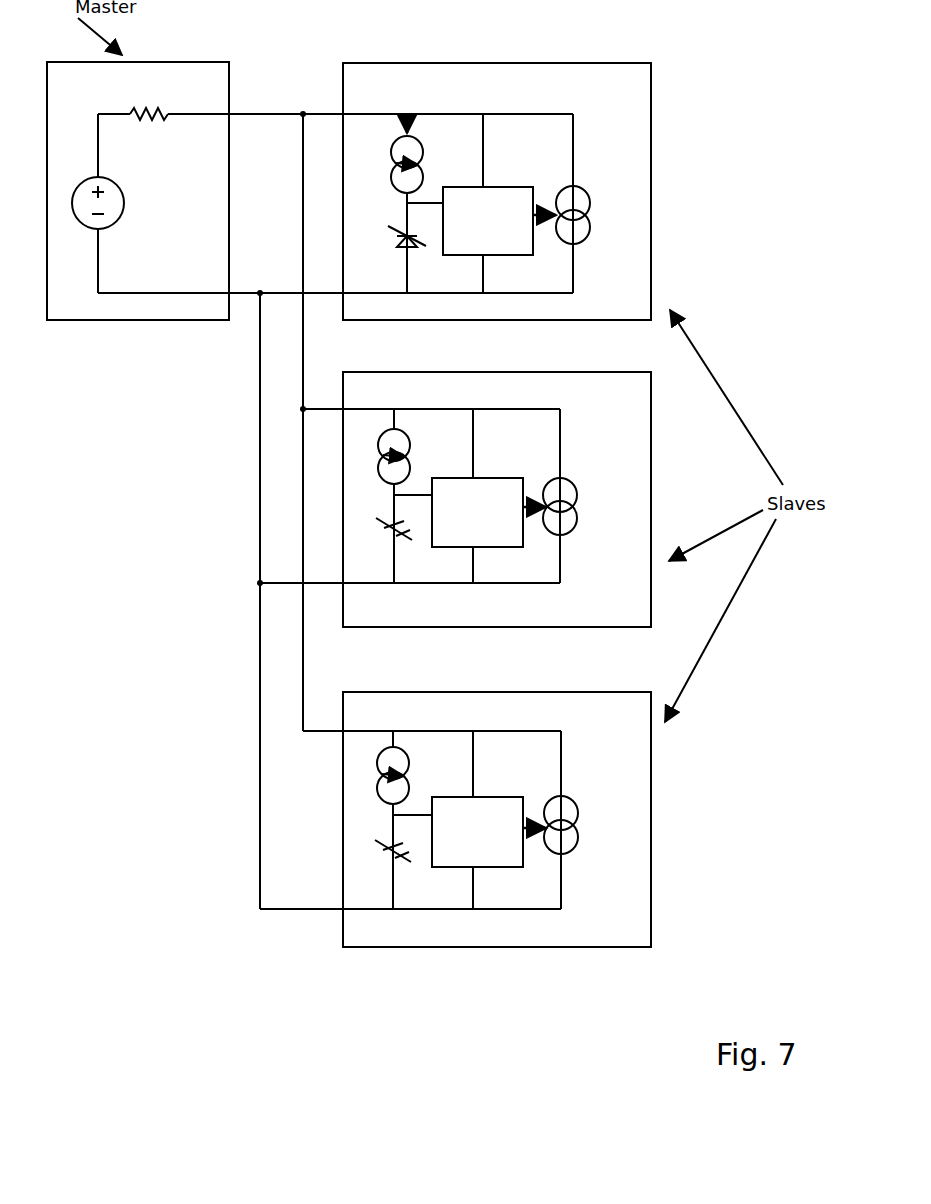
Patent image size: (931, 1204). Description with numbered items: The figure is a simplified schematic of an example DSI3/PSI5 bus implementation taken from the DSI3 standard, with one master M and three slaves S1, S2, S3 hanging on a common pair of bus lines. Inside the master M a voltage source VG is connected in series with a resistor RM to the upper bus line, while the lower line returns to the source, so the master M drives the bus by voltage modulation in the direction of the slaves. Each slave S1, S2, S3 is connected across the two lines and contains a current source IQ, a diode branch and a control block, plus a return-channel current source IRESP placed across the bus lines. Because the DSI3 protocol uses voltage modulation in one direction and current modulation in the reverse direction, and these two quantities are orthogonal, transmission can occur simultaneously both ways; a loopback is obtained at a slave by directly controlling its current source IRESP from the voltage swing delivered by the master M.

The master M is at (138, 210).
The master resistor RM is at (149, 101).
The master voltage source VG is at (92, 203).
The slave S1 is at (519, 191).
The slave S2 is at (519, 499).
The slave S3 is at (519, 819).
The quiescent current source IQ is at (386, 470).
The response current source IRESP is at (585, 520).